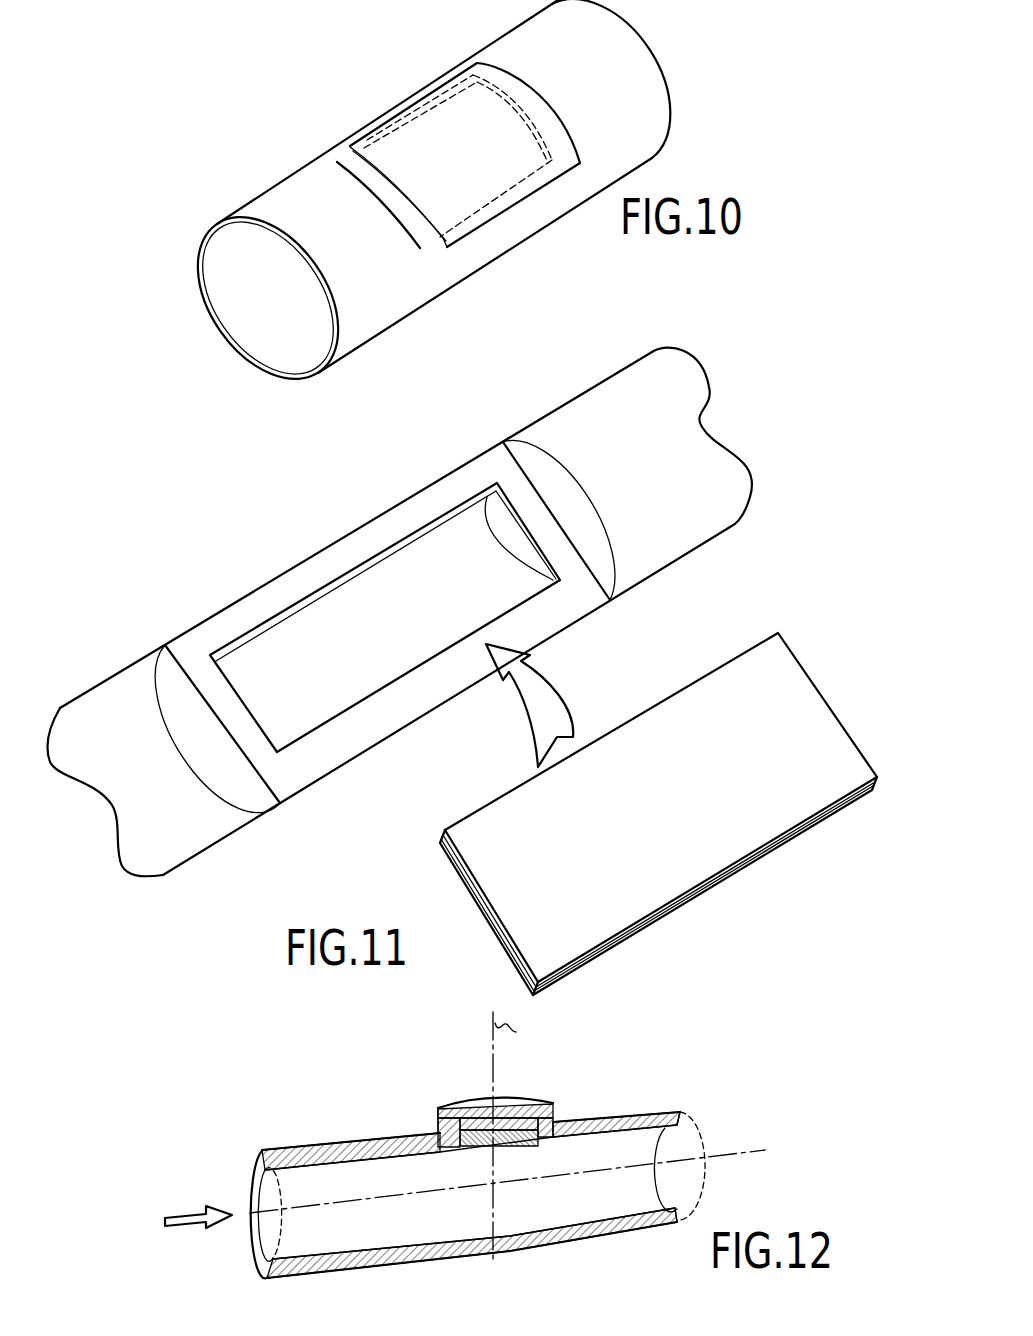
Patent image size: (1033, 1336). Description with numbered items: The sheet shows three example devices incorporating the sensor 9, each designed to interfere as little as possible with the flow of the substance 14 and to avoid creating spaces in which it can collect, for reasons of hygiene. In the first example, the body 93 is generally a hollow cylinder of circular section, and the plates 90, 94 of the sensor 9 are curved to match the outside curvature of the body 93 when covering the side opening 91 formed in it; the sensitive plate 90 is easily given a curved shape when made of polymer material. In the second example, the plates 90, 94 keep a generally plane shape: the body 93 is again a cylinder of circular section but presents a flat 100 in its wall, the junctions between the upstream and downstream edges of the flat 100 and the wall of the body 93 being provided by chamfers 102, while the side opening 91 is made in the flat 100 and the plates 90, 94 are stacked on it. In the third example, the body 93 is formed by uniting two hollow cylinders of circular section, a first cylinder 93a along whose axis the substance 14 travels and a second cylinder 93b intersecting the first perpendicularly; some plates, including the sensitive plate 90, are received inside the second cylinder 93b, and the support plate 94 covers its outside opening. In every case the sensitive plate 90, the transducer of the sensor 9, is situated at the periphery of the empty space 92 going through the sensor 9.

In FIG. 10, the sensor 9 is at (240, 91).
In FIG. 11, the sensor 9 is at (218, 510).
In FIG. 12, the substance 14 is at (188, 1215).
In FIG. 10, the sensitive plate 90 is at (437, 130).
In FIG. 11, the sensitive plate 90 is at (627, 938).
In FIG. 12, the sensitive plate 90 is at (450, 1140).
In FIG. 10, the side opening 91 is at (397, 193).
In FIG. 11, the side opening 91 is at (357, 600).
In FIG. 10, the empty space 92 is at (283, 307).
In FIG. 12, the empty space 92 is at (400, 1209).
In FIG. 10, the body 93 is at (657, 60).
In FIG. 11, the body 93 is at (737, 490).
In FIG. 12, the body 93 is at (610, 1118).
In FIG. 12, the first cylinder 93a is at (548, 1237).
In FIG. 12, the second cylinder 93b is at (440, 1129).
In FIG. 10, the support plate 94 is at (465, 141).
In FIG. 11, the support plate 94 is at (698, 863).
In FIG. 12, the support plate 94 is at (470, 1099).
In FIG. 11, the flat 100 is at (402, 690).
In FIG. 11, the chamfers 102 is at (224, 772).